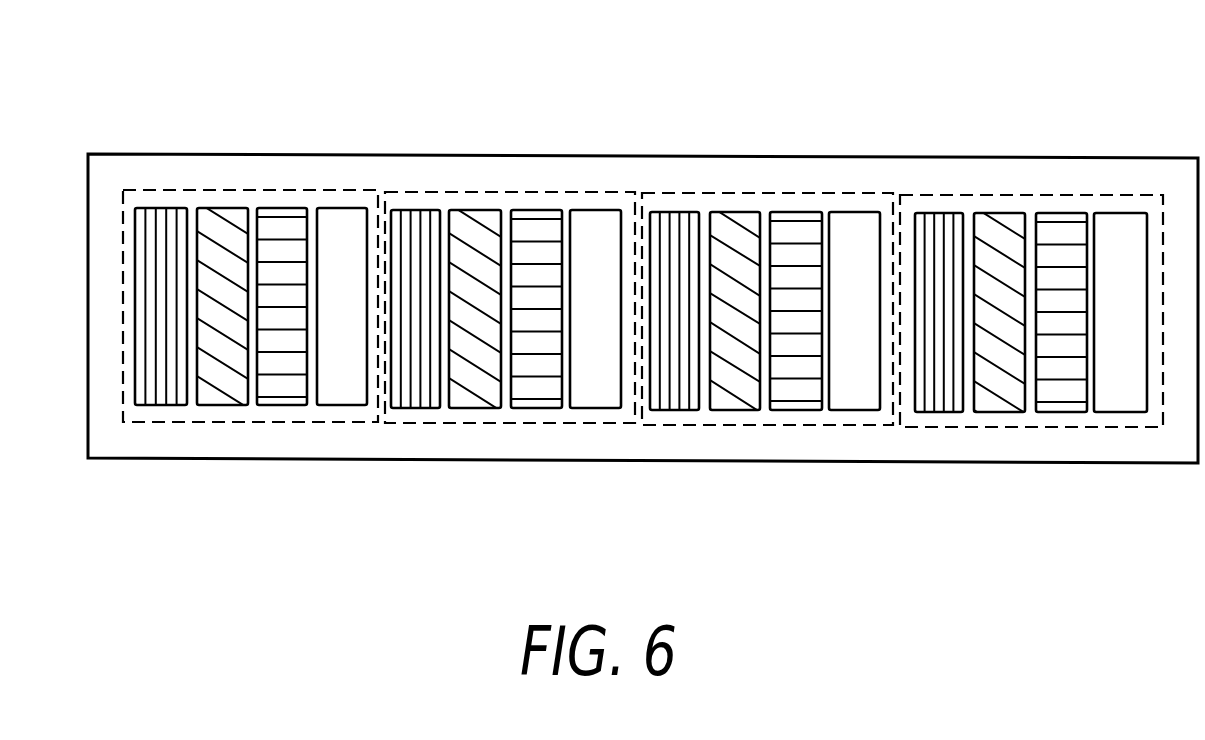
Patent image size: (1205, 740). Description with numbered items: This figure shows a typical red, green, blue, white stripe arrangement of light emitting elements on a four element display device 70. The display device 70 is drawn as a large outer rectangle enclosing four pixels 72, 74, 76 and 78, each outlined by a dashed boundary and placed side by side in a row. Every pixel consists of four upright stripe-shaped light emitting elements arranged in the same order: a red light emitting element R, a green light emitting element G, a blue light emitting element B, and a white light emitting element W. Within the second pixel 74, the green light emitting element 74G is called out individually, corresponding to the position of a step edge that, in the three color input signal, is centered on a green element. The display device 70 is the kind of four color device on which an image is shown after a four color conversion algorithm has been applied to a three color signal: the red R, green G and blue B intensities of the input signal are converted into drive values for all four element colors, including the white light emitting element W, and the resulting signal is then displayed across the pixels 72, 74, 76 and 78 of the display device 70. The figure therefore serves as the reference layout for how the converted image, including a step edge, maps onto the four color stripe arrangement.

The display device 70 is at (955, 158).
The pixel 72 is at (235, 301).
The pixel 74 is at (510, 302).
The green light emitting element 74G is at (477, 208).
The pixel 76 is at (798, 400).
The pixel 78 is at (1070, 427).
The red light emitting element R is at (162, 405).
The green light emitting element G is at (230, 405).
The blue light emitting element B is at (287, 405).
The white light emitting element W is at (347, 405).